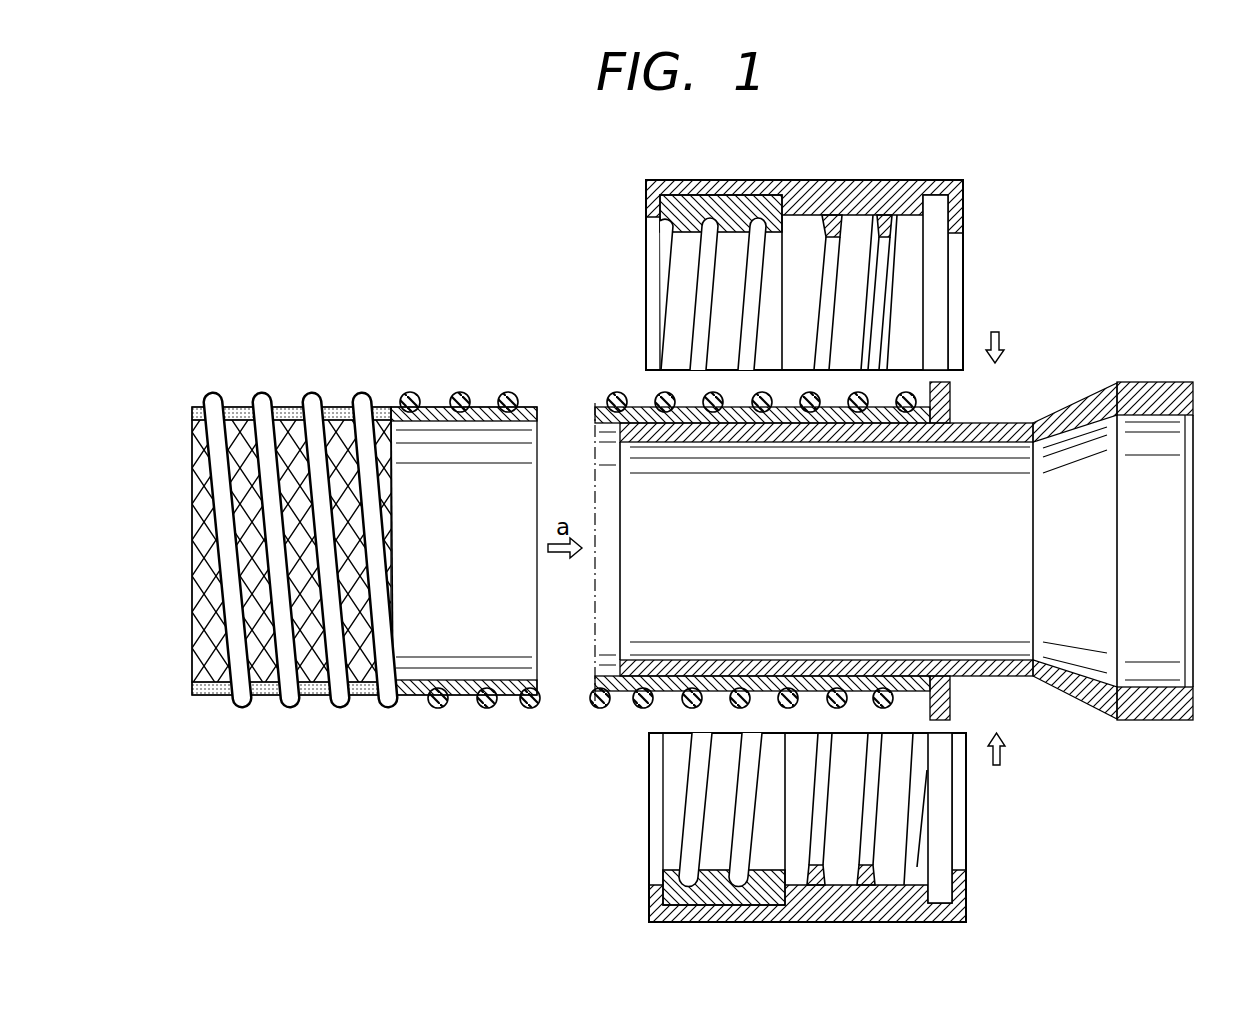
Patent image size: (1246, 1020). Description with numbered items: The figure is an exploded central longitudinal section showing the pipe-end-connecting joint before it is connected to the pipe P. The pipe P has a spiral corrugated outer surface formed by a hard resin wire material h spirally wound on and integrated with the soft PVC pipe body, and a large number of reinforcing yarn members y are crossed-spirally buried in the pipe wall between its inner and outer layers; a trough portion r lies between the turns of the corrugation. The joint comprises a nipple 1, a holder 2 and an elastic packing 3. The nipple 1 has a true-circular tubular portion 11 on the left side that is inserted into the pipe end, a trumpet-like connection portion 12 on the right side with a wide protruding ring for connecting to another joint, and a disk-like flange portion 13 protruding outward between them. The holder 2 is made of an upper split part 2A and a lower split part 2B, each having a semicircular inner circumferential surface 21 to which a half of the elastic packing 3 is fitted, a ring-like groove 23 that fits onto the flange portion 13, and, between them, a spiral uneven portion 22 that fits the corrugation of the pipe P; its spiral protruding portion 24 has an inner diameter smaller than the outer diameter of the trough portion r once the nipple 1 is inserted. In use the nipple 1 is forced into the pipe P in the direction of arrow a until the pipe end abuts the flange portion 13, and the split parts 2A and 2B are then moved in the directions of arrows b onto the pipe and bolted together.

The pipe P is at (238, 362).
The hard resin wire material h is at (262, 398).
The reinforcing yarn members y is at (329, 400).
The trough portion r is at (436, 405).
The nipple 1 is at (1065, 392).
The true-circular tubular portion 11 is at (657, 585).
The connection portion 12 is at (1165, 380).
The flange portion 13 is at (958, 393).
The holder 2 is at (612, 207).
The upper split part 2A is at (967, 188).
The lower split part 2B is at (966, 897).
The inner circumferential surface 21 is at (650, 243).
The spiral uneven portion 22 is at (852, 232).
The ring-like groove 23 is at (937, 260).
The spiral protruding portion 24 is at (882, 232).
The elastic packing 3 is at (680, 303).